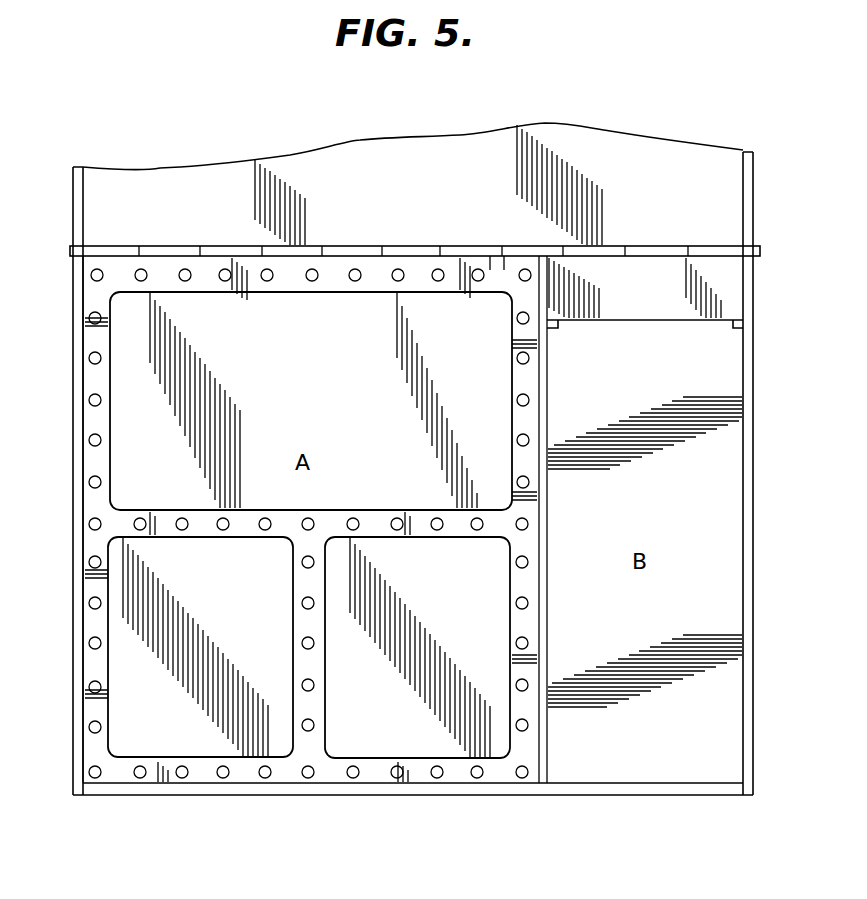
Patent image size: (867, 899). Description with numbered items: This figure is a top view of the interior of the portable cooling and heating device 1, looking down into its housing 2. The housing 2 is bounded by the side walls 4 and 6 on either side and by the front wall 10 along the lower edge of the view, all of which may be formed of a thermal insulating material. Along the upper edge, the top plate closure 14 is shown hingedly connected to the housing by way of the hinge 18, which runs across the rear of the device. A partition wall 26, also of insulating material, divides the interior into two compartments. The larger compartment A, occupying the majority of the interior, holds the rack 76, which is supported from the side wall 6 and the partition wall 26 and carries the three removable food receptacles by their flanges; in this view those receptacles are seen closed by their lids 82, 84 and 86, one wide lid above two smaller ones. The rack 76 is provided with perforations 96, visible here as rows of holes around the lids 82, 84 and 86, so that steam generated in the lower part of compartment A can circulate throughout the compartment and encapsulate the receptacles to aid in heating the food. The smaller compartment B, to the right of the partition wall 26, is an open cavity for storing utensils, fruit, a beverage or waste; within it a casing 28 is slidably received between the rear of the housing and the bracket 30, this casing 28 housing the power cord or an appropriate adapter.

The portable cooling and heating device 1 is at (137, 131).
The housing 2 is at (67, 651).
The side wall 4 is at (750, 538).
The side wall 6 is at (72, 528).
The front wall 10 is at (232, 795).
The top plate closure 14 is at (623, 195).
The hinge 18 is at (163, 246).
The partition wall 26 is at (542, 509).
The casing 28 is at (657, 300).
The bracket 30 is at (554, 332).
The rack 76 is at (497, 263).
The lid 82 is at (317, 406).
The lid 84 is at (215, 662).
The lid 86 is at (431, 661).
The perforations 96 is at (355, 268).